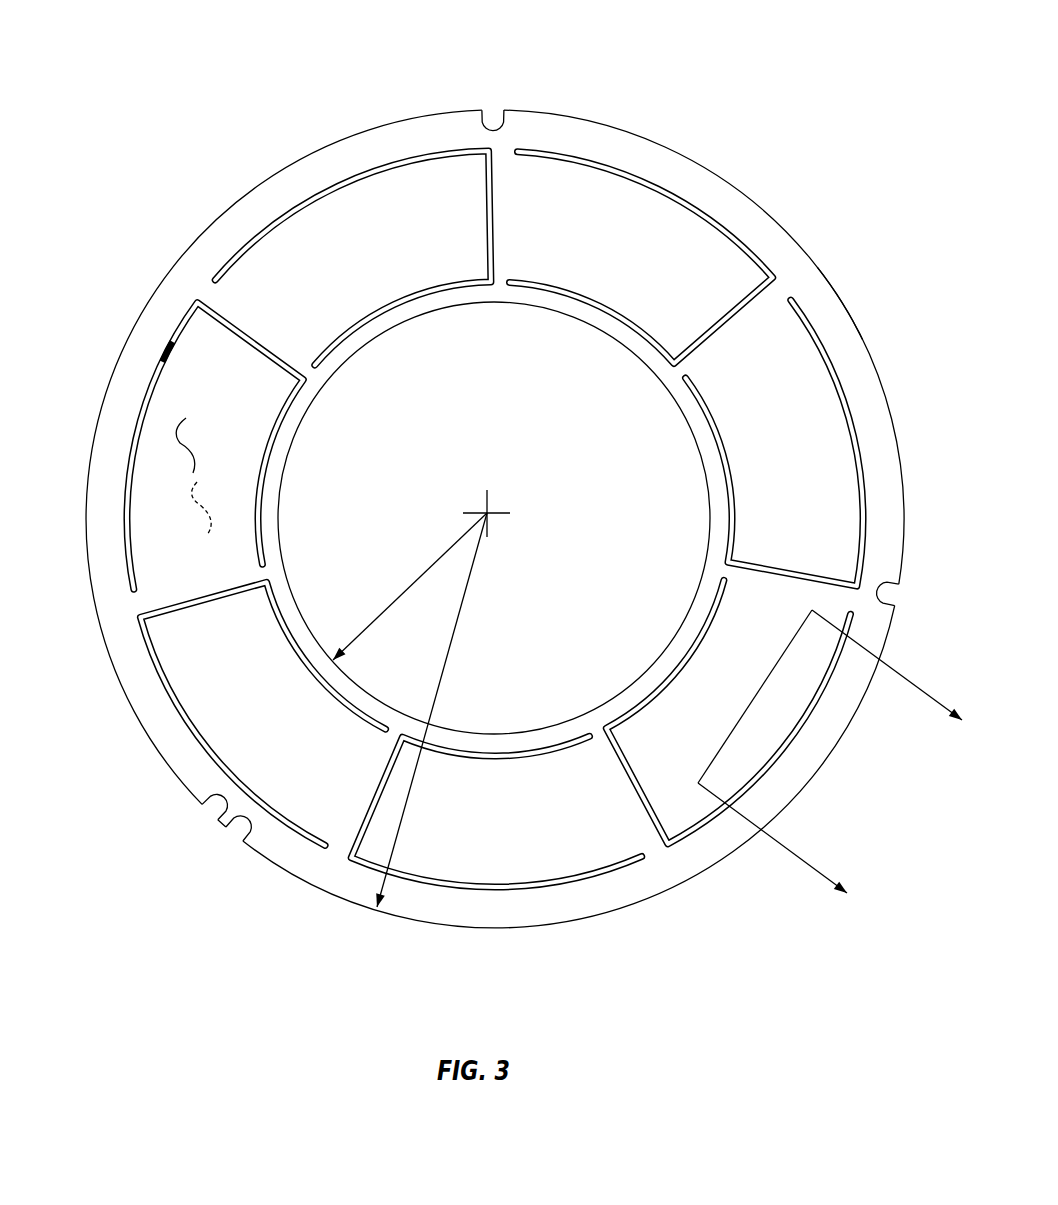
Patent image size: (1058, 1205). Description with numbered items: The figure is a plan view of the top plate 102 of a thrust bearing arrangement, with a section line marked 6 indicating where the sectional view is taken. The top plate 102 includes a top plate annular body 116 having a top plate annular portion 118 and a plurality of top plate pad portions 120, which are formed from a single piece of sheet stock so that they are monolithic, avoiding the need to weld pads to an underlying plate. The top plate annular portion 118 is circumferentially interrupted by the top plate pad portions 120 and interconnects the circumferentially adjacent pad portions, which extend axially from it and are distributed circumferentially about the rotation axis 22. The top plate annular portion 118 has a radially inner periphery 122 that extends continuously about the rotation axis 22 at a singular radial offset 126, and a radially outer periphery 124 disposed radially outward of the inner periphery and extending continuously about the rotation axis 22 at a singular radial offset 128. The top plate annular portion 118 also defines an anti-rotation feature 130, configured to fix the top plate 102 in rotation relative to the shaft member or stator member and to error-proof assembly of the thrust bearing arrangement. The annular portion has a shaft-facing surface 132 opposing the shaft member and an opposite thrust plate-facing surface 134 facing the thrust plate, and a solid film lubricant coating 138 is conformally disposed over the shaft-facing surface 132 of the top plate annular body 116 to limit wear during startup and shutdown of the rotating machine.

The top plate 102 is at (502, 533).
The top plate annular body 116 is at (495, 497).
The top plate annular portion 118 is at (654, 205).
The top plate pad portions 120 is at (537, 153).
The radially inner periphery 122 is at (673, 402).
The radially outer periphery 124 is at (848, 316).
The singular radial offset 126 is at (370, 624).
The singular radial offset 128 is at (443, 672).
The anti-rotation feature 130 is at (198, 857).
The shaft-facing surface 132 is at (187, 446).
The thrust plate-facing surface 134 is at (200, 508).
The solid film lubricant coating 138 is at (165, 347).
The rotation axis 22 is at (490, 510).
The section line 6- 6 is at (830, 751).